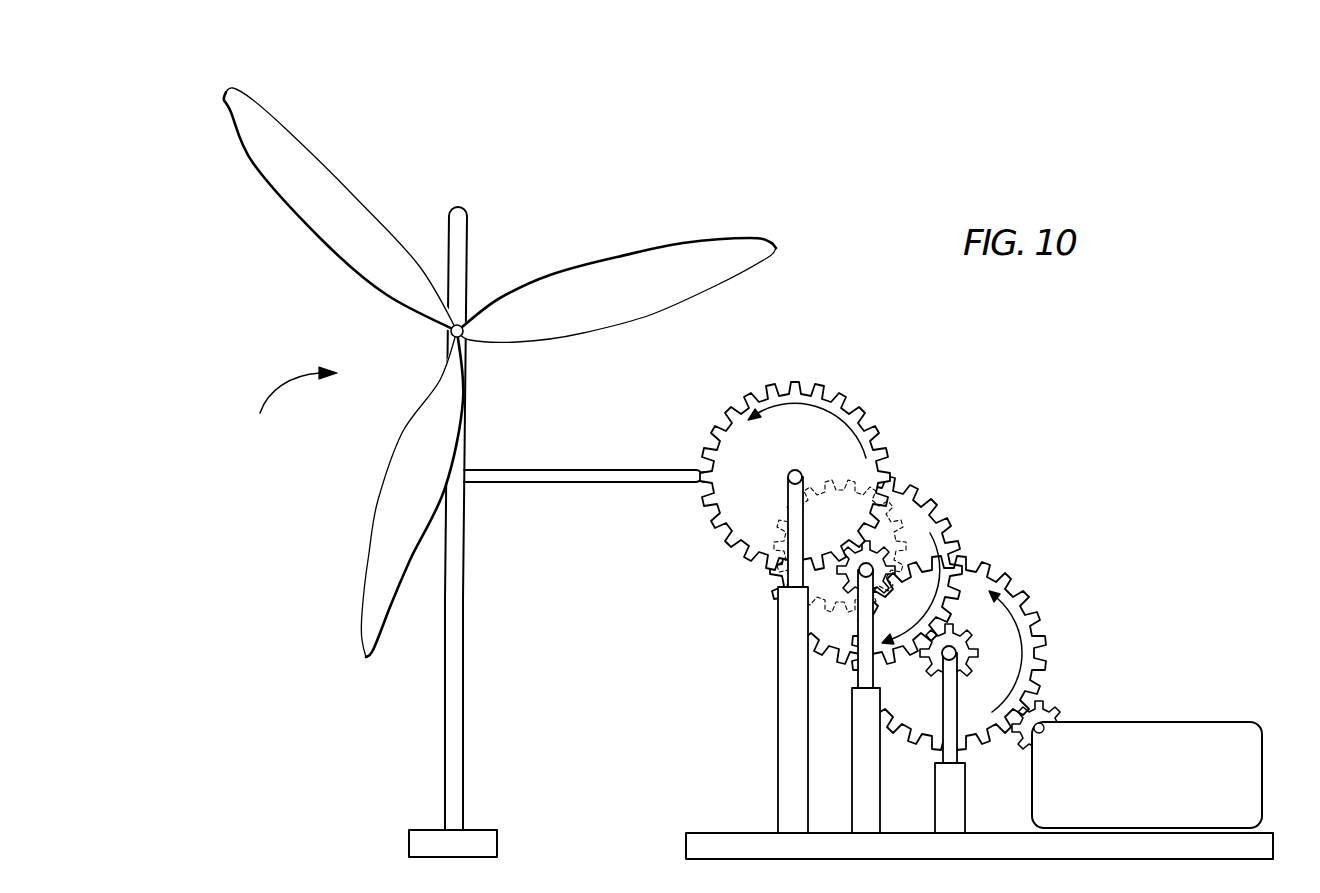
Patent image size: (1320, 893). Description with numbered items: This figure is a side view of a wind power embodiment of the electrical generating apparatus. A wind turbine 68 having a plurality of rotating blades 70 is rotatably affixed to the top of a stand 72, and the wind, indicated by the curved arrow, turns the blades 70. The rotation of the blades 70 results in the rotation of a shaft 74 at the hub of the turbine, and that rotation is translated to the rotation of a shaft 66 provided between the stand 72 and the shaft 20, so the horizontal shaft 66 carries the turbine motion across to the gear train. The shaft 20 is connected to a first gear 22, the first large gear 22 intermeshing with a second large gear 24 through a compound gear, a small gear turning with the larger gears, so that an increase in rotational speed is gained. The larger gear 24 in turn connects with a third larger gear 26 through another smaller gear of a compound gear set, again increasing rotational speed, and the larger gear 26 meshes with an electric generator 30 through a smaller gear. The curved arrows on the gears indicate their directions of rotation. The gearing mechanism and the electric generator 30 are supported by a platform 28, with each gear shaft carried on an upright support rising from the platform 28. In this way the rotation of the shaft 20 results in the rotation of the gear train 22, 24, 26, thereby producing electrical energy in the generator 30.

The shaft 20 is at (795, 477).
The first gear 22 is at (877, 452).
The second large gear 24 is at (907, 520).
The third larger gear 26 is at (1040, 657).
The platform 28 is at (728, 832).
The electric generator 30 is at (1135, 795).
The shaft 66 is at (583, 469).
The wind turbine 68 is at (263, 393).
The rotating blades 70 is at (318, 214).
The stand 72 is at (464, 740).
The shaft 74 is at (460, 340).